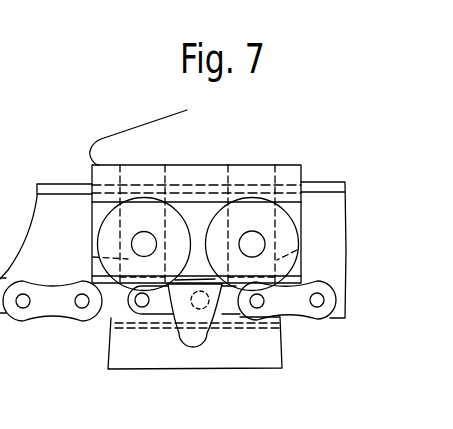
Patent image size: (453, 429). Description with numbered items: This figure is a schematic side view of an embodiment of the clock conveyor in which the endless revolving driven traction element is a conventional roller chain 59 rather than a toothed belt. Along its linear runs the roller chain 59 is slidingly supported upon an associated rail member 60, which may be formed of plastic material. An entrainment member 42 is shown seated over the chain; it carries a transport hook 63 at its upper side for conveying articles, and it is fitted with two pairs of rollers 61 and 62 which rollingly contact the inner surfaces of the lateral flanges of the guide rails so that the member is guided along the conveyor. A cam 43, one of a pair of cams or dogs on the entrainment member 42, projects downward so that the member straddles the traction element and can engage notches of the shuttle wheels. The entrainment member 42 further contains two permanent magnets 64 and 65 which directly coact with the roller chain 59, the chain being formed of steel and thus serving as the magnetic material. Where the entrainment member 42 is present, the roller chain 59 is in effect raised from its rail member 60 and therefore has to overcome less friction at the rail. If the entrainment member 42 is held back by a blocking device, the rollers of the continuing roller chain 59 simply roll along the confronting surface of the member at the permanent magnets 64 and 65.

The entrainment member 42 is at (193, 158).
The cam 43 is at (176, 337).
The roller chain 59 is at (51, 307).
The rail member 60 is at (122, 353).
The rollers 61 is at (107, 228).
The rollers 62 is at (283, 227).
The transport hook 63 is at (143, 121).
The permanent magnet 64 is at (93, 257).
The permanent magnet 65 is at (297, 249).